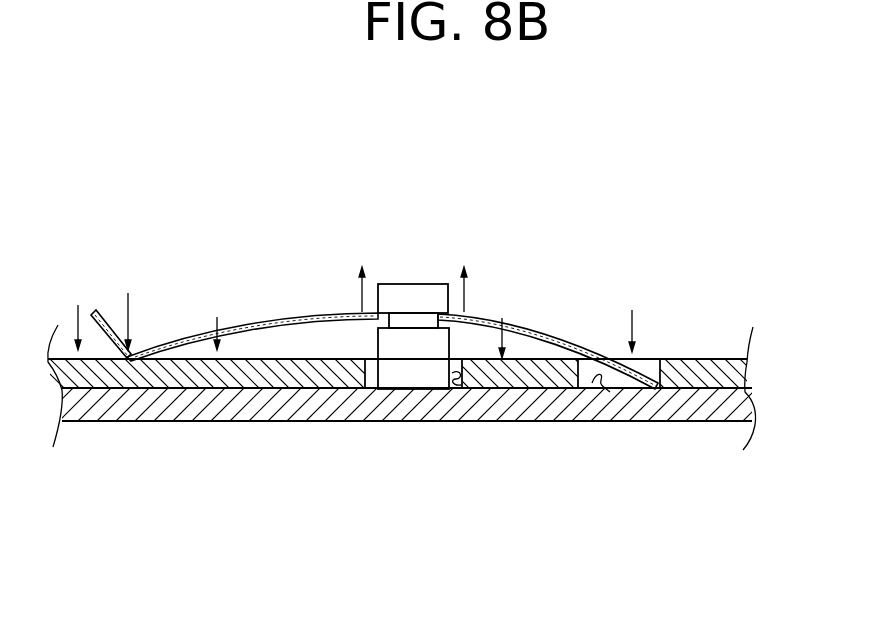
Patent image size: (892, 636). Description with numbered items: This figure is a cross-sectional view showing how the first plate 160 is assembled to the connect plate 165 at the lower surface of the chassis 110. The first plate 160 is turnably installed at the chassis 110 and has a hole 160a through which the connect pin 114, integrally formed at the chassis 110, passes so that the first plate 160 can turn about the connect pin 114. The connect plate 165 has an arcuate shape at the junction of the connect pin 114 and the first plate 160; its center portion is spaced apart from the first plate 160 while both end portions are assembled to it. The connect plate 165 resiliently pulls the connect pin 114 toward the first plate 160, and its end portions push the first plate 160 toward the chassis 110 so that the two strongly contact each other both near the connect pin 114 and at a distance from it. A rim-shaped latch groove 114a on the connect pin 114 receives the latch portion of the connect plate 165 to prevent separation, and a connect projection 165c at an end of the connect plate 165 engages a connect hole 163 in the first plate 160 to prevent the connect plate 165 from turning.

The chassis 110 is at (197, 405).
The first plate 160 is at (693, 370).
The hole 160a is at (462, 383).
The connect hole 163 is at (608, 388).
The connect pin 114 is at (402, 295).
The latch groove 114a is at (383, 318).
The connect plate 165 is at (262, 322).
The connect projection 165c is at (657, 357).